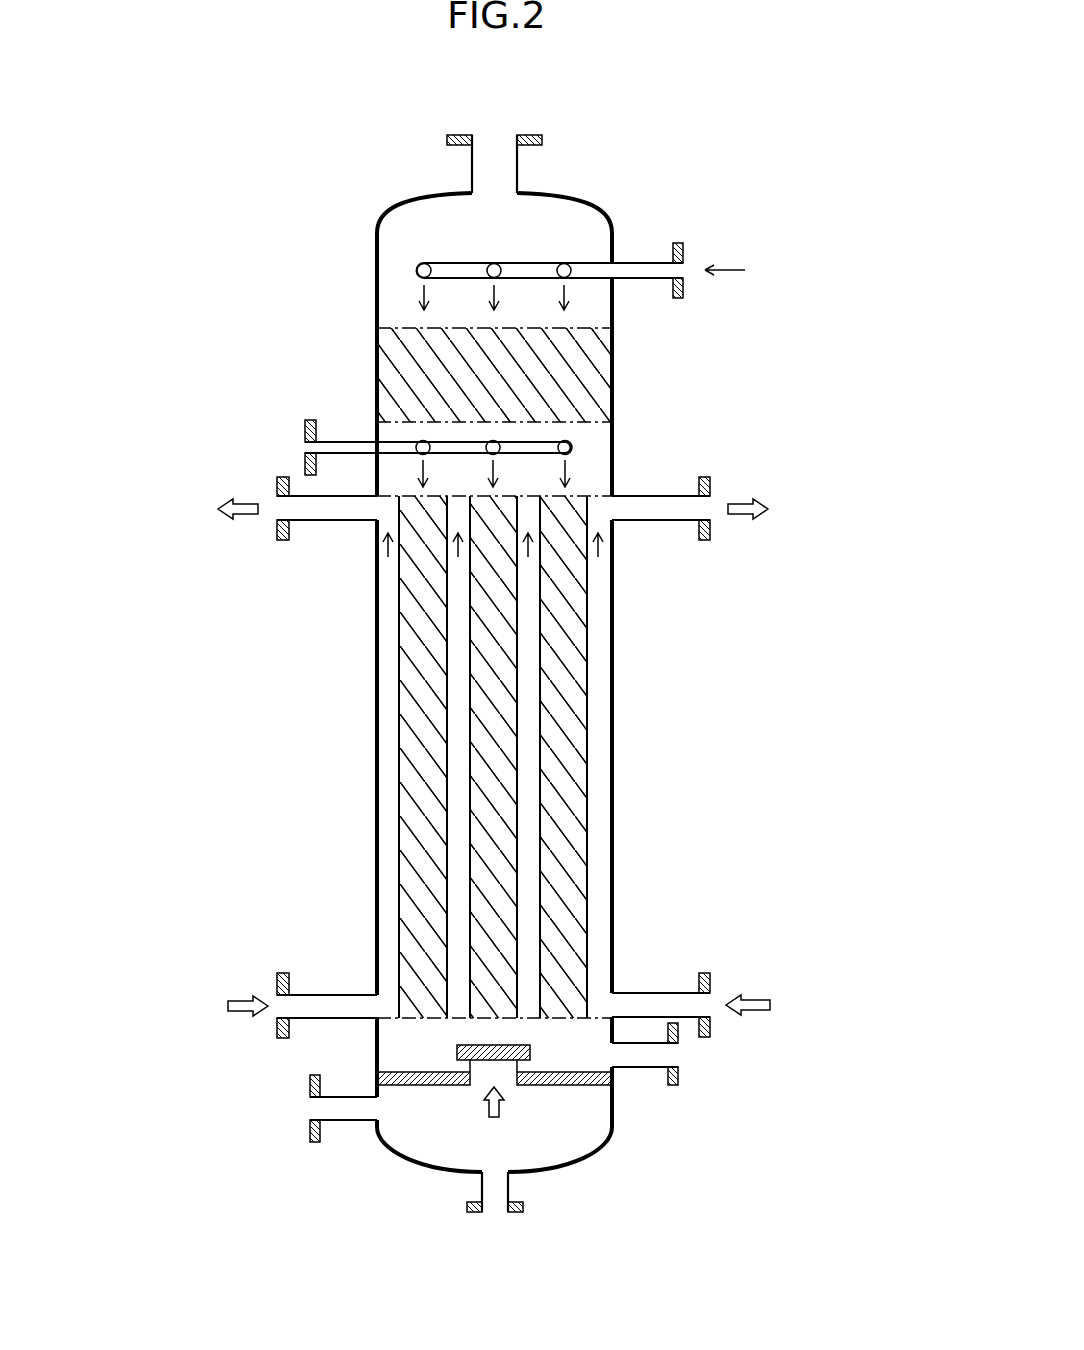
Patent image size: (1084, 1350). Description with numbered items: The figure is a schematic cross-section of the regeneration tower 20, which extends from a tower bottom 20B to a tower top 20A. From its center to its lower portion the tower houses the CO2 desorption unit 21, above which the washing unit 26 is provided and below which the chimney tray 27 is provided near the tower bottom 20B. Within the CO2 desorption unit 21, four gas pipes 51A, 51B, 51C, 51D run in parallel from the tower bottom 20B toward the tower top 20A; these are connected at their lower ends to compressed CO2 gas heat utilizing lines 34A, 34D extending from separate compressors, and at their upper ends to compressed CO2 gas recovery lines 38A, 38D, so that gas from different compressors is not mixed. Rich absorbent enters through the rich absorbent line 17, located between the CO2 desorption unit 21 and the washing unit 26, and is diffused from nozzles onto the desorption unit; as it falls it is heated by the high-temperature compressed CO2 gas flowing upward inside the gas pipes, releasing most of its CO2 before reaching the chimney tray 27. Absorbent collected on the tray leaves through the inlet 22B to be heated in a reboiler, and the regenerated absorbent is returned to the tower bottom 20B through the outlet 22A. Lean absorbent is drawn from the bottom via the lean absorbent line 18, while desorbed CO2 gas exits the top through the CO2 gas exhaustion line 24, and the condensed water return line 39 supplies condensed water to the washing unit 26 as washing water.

The regeneration tower 20 is at (703, 165).
The tower top 20A is at (577, 203).
The tower bottom 20B is at (567, 1167).
The CO2 gas exhaustion line 24 is at (497, 133).
The condensed water return line 39 is at (687, 270).
The washing unit 26 is at (572, 366).
The rich absorbent line 17 is at (305, 446).
The compressed CO2 gas recovery line 38A is at (278, 510).
The compressed CO2 gas recovery line 38D is at (716, 526).
The CO2 desorption unit 21 is at (413, 598).
The gas pipe 51A is at (392, 653).
The gas pipe 51B is at (455, 607).
The gas pipe 51C is at (530, 685).
The gas pipe 51D is at (600, 842).
The compressed CO2 gas heat utilizing line 34A is at (278, 998).
The compressed CO2 gas heat utilizing line 34D is at (712, 1002).
The inlet of absorbent regeneration line 22B is at (680, 1055).
The chimney tray 27 is at (585, 1082).
The lean absorbent line 18 is at (307, 1107).
The outlet of absorbent regeneration line 22A is at (490, 1213).